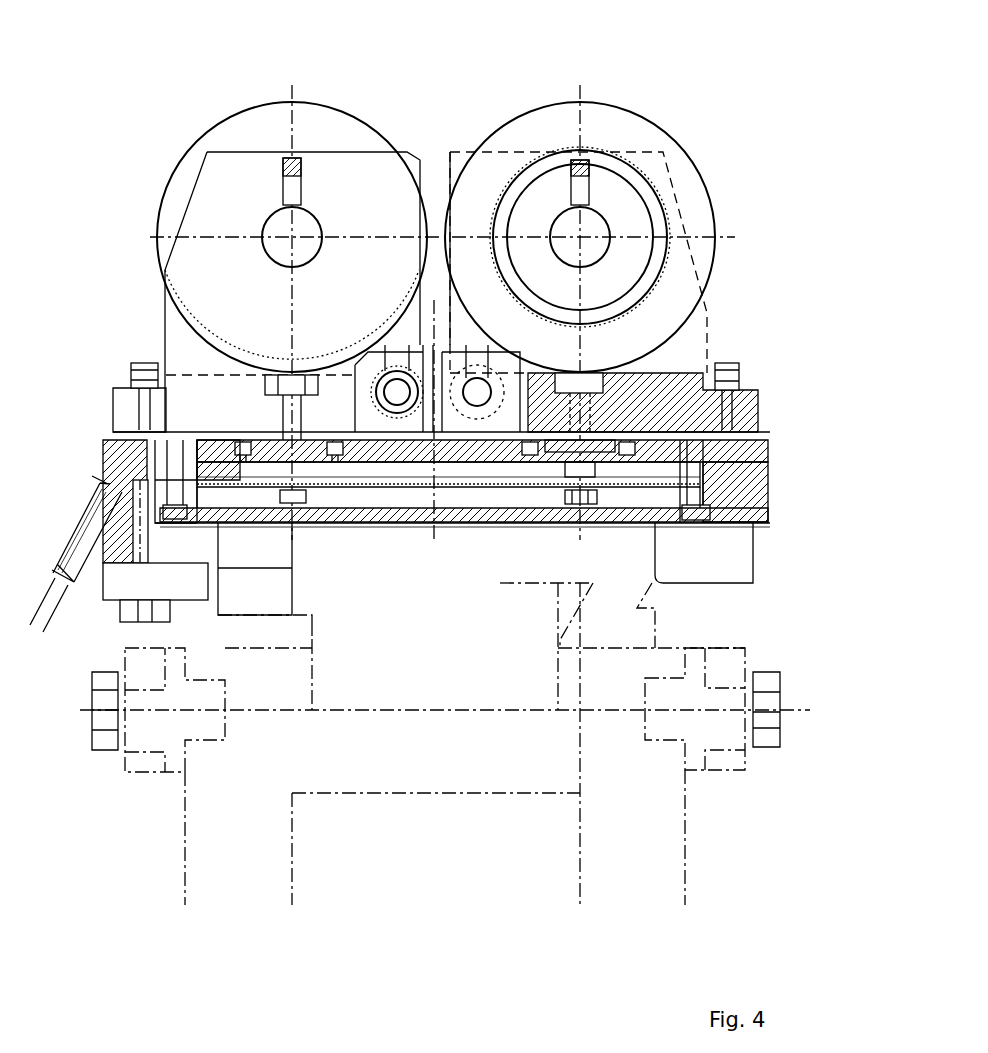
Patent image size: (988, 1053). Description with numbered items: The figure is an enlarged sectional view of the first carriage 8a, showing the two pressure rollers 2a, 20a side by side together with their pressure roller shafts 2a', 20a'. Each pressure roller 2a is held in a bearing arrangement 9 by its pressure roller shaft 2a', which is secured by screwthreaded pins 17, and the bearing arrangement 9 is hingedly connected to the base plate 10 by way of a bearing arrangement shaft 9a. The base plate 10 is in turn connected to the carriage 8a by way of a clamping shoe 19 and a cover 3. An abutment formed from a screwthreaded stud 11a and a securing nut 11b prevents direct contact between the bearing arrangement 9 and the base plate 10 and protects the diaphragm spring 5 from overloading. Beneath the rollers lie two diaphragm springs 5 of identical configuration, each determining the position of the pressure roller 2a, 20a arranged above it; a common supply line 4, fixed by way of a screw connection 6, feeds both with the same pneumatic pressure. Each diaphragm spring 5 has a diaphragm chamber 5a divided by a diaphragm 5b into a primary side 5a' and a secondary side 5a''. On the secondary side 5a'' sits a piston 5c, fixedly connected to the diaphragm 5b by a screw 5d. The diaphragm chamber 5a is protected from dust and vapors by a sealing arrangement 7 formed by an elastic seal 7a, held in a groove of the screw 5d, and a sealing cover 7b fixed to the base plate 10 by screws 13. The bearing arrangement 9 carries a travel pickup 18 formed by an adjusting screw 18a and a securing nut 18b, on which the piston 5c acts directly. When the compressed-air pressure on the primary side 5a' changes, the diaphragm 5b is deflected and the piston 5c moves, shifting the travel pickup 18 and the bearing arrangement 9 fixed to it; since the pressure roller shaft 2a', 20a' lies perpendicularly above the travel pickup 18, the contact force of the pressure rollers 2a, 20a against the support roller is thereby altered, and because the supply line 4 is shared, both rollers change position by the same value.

The pressure roller 2a is at (580, 202).
The pressure roller shaft 2a' is at (623, 157).
The cover 3 is at (110, 600).
The supply line 4 is at (52, 597).
The diaphragm spring 5 is at (512, 495).
The diaphragm chamber 5a is at (509, 604).
The primary side 5a' is at (534, 691).
The secondary side 5a'' is at (473, 676).
The diaphragm 5b is at (655, 478).
The piston 5c is at (740, 485).
The screw 5d is at (592, 512).
The screw connection 6 is at (97, 507).
The sealing arrangement 7 is at (318, 462).
The elastic seal 7a is at (290, 452).
The sealing cover 7b is at (214, 393).
The first carriage 8a is at (685, 785).
The bearing arrangement 9 is at (195, 226).
The bearing arrangement shaft 9a is at (372, 372).
The base plate 10 is at (752, 452).
The screwthreaded stud 11a is at (142, 408).
The securing nut 11b is at (135, 375).
The screws 13 is at (313, 465).
The screwthreaded pins 17 is at (287, 155).
The travel pickup 18 is at (597, 388).
The adjusting screw 18a is at (593, 445).
The securing nut 18b is at (600, 418).
The clamping shoe 19 is at (748, 555).
The pressure roller 20a is at (292, 197).
The pressure roller shaft 20a' is at (346, 146).